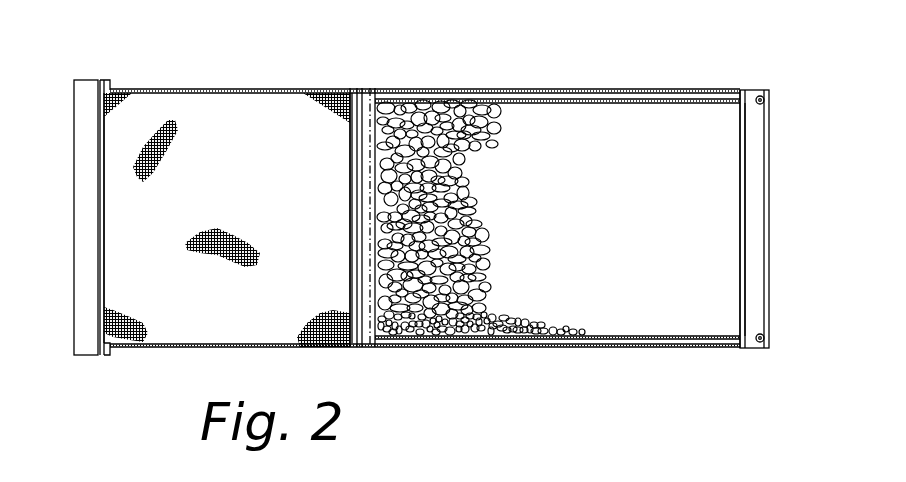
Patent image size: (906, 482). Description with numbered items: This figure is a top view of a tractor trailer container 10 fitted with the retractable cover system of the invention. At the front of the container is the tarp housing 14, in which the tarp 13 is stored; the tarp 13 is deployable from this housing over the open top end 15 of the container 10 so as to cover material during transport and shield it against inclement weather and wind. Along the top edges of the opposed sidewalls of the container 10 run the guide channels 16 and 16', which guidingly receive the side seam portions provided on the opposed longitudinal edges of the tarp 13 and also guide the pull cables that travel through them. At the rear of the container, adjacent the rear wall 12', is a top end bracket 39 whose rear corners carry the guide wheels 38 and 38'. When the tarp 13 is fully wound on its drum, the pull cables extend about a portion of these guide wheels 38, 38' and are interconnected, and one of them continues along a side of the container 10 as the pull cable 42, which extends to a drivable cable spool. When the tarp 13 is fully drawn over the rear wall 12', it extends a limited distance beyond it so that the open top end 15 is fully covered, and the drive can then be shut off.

The tractor trailer container 10 is at (324, 11).
The rear wall 12' is at (702, 219).
The tarp 13 is at (230, 143).
The tarp housing 14 is at (82, 107).
The open top end 15 is at (708, 145).
The guide channel 16 is at (425, 373).
The guide channel 16' is at (425, 76).
The guide wheel 38 is at (786, 77).
The guide wheel 38' is at (793, 367).
The top end bracket 39 is at (752, 197).
The pull cable 42 is at (565, 345).